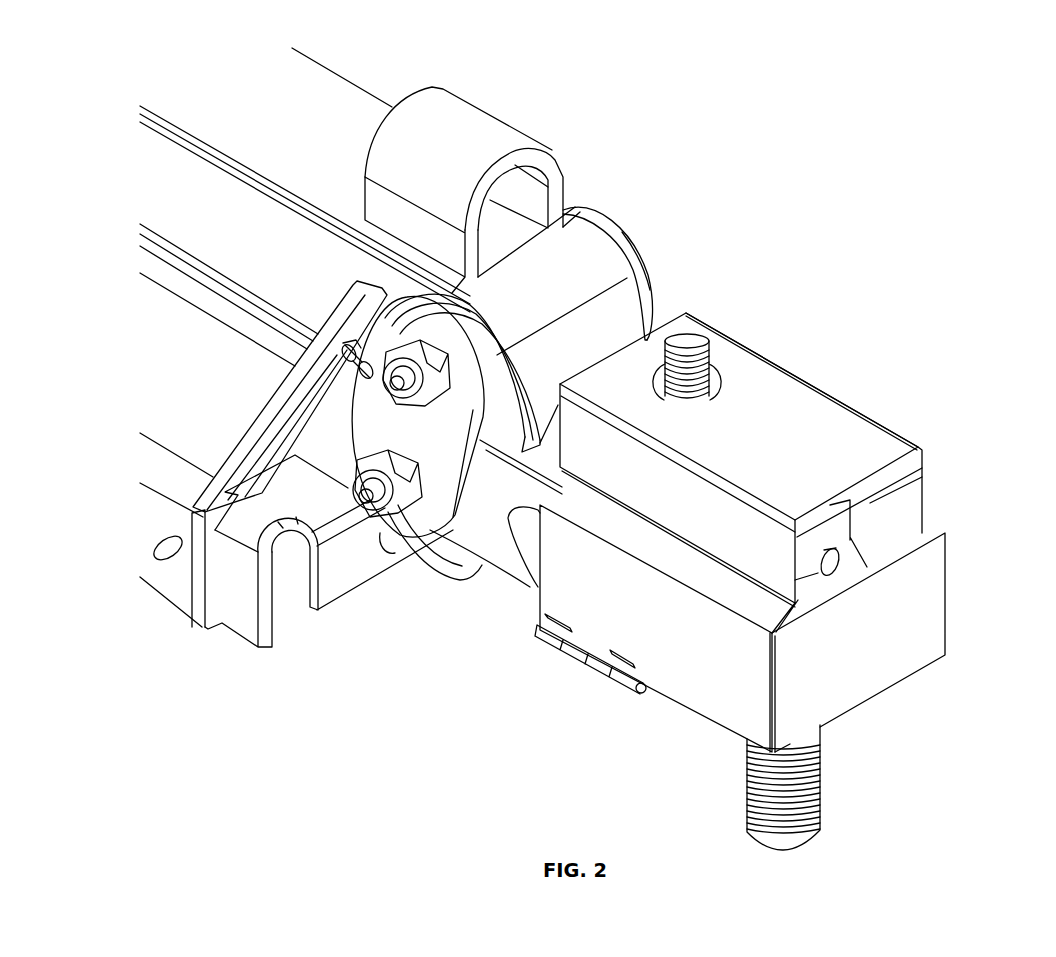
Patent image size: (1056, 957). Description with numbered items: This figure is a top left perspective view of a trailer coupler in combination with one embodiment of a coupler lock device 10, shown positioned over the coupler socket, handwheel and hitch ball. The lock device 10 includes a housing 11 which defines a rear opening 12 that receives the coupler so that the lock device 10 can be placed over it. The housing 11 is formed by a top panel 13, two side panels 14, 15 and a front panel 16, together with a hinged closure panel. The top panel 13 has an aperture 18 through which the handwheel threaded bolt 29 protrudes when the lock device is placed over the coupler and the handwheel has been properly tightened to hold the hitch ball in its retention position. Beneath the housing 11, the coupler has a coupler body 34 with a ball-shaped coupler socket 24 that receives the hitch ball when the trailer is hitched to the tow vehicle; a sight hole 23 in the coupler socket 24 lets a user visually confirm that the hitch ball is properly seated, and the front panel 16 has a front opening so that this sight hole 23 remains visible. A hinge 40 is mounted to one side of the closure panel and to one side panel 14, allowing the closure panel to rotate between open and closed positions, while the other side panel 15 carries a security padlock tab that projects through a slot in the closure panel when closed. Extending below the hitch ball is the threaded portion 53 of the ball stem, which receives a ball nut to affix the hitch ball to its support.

The coupler lock device 10 is at (818, 292).
The housing 11 is at (787, 445).
The rear opening 12 is at (652, 335).
The top panel 13 is at (642, 394).
The side panel 14 is at (705, 683).
The side panel 15 is at (900, 433).
The front panel 16 is at (776, 677).
The aperture 18 is at (711, 350).
The sight hole 23 is at (840, 547).
The coupler socket 24 is at (847, 580).
The handwheel threaded bolt 29 is at (684, 336).
The coupler body 34 is at (505, 527).
The hinge 40 is at (622, 687).
The threaded portion 53 is at (820, 813).